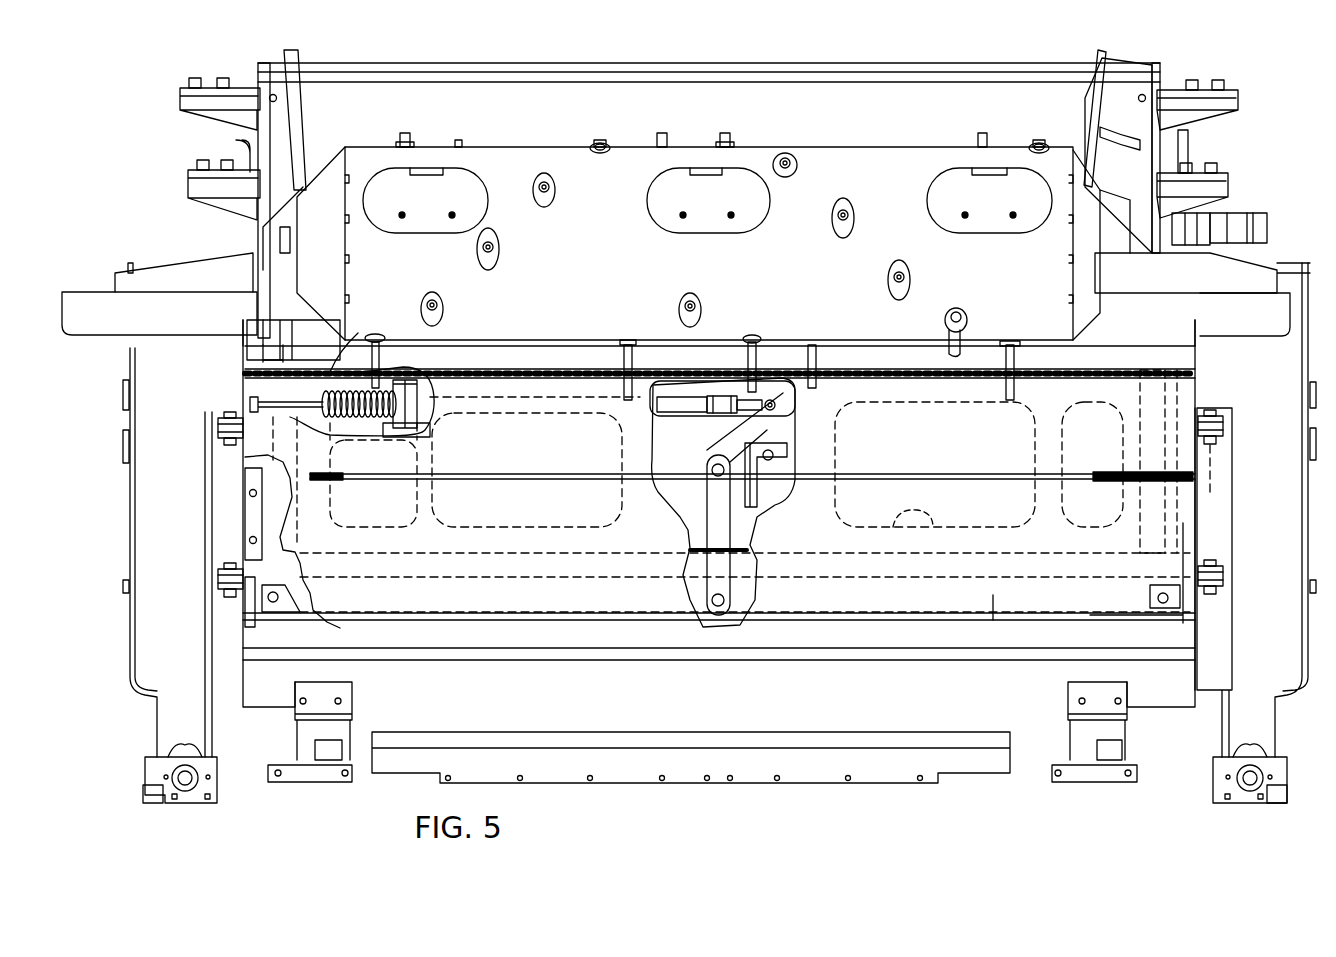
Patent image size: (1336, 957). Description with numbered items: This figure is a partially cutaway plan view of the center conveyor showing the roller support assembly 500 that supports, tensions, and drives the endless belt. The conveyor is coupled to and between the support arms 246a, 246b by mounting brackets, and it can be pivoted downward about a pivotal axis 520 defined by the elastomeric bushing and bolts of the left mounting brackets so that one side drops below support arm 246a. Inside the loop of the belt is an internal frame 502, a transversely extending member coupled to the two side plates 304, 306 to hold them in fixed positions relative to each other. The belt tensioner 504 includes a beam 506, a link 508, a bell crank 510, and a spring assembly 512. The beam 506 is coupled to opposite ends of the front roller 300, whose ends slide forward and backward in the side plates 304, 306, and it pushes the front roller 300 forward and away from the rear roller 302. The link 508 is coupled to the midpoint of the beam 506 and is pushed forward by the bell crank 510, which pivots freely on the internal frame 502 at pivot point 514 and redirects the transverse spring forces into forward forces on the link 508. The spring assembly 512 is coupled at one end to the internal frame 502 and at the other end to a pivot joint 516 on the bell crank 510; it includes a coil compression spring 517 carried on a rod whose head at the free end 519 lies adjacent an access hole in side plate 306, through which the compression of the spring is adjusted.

The support arm 246a is at (160, 660).
The support arm 246b is at (1270, 660).
The front roller 300 is at (945, 648).
The rear roller 302 is at (263, 352).
The side plate 304 is at (1197, 543).
The side plate 306 is at (243, 517).
The roller support assembly 500 is at (650, 685).
The internal frame 502 is at (893, 527).
The belt tensioner 504 is at (680, 490).
The beam 506 is at (993, 620).
The link 508 is at (727, 583).
The bell crank 510 is at (772, 423).
The spring assembly 512 is at (403, 367).
The pivot point 514 is at (773, 455).
The pivot joint 516 is at (770, 387).
The coil compression spring 517 is at (358, 333).
The free end 519 is at (385, 433).
The pivotal axis 520 is at (1213, 473).